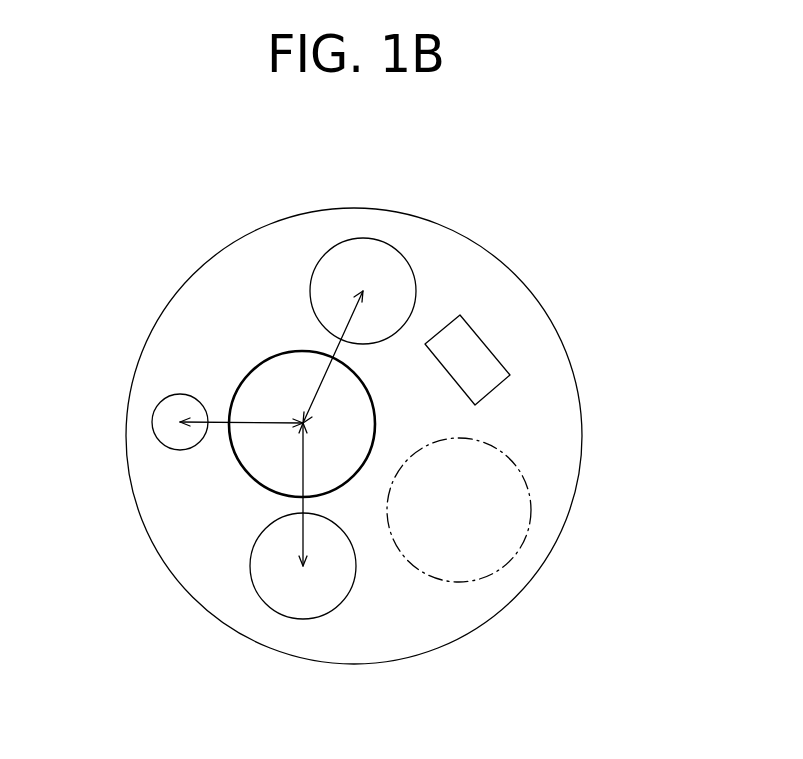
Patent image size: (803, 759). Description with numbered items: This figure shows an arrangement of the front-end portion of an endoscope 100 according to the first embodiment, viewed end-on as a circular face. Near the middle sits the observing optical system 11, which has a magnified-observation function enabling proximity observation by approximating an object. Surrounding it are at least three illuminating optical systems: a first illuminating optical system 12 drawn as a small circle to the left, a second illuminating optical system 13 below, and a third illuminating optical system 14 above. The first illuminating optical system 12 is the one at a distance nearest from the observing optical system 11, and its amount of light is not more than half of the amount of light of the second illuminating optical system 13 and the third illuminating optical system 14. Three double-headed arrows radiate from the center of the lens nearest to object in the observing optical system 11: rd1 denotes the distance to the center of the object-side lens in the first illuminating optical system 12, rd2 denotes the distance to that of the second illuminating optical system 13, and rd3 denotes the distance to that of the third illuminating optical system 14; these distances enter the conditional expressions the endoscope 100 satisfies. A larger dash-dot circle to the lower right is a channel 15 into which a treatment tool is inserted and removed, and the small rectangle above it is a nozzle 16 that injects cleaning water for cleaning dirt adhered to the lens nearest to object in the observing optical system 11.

The endoscope 100 is at (528, 198).
The observing optical system 11 is at (265, 358).
The first illuminating optical system 12 is at (152, 420).
The second illuminating optical system 13 is at (257, 595).
The third illuminating optical system 14 is at (384, 243).
The channel 15 is at (532, 510).
The nozzle 16 is at (493, 390).
The distance between observing optical system and first illuminating optical system rd1 is at (240, 417).
The distance between observing optical system and second illuminating optical system rd2 is at (298, 473).
The distance between observing optical system and third illuminating optical system rd3 is at (348, 322).